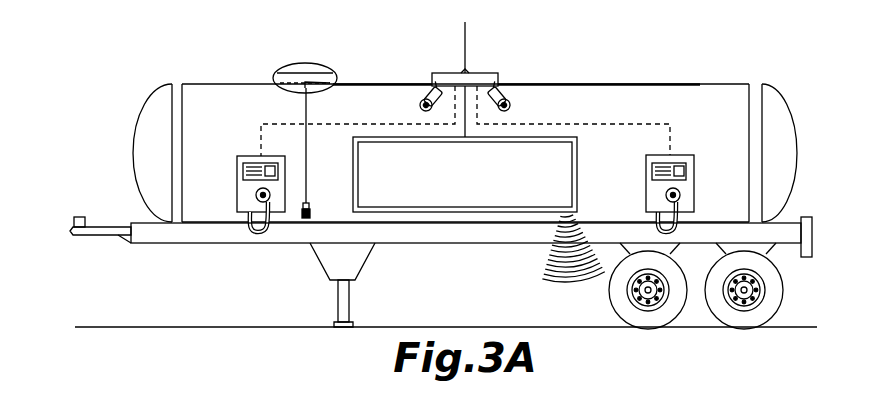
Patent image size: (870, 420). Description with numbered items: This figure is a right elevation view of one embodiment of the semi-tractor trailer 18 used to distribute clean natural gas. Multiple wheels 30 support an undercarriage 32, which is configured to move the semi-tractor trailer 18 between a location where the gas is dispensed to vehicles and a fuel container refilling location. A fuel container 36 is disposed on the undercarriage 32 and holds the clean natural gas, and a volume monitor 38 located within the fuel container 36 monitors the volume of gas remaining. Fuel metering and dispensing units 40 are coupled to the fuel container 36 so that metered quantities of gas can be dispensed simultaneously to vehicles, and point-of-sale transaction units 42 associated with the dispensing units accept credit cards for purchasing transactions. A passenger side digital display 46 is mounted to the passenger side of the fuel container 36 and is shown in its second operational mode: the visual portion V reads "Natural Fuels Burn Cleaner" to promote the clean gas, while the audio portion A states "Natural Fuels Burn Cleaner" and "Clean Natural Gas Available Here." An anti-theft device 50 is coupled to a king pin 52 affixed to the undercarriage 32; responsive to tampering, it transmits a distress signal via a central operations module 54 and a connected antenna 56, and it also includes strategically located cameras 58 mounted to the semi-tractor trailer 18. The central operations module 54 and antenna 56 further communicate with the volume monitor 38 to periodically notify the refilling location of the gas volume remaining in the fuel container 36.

The semi-tractor trailer 18 is at (657, 81).
The wheels 30 is at (784, 290).
The undercarriage 32 is at (488, 244).
The fuel container 36 is at (790, 153).
The volume monitor 38 is at (308, 184).
The fuel metering and dispensing units 40 is at (248, 223).
The point-of-sale transaction units 42 is at (240, 190).
The passenger side digital display 46 is at (578, 173).
The anti-theft device 50 is at (80, 216).
The king pin 52 is at (73, 236).
The central operations module 54 is at (478, 72).
The antenna 56 is at (463, 44).
The cameras 58 is at (425, 96).
The visual portion of the display V is at (416, 215).
The audio portion of the display A is at (563, 289).